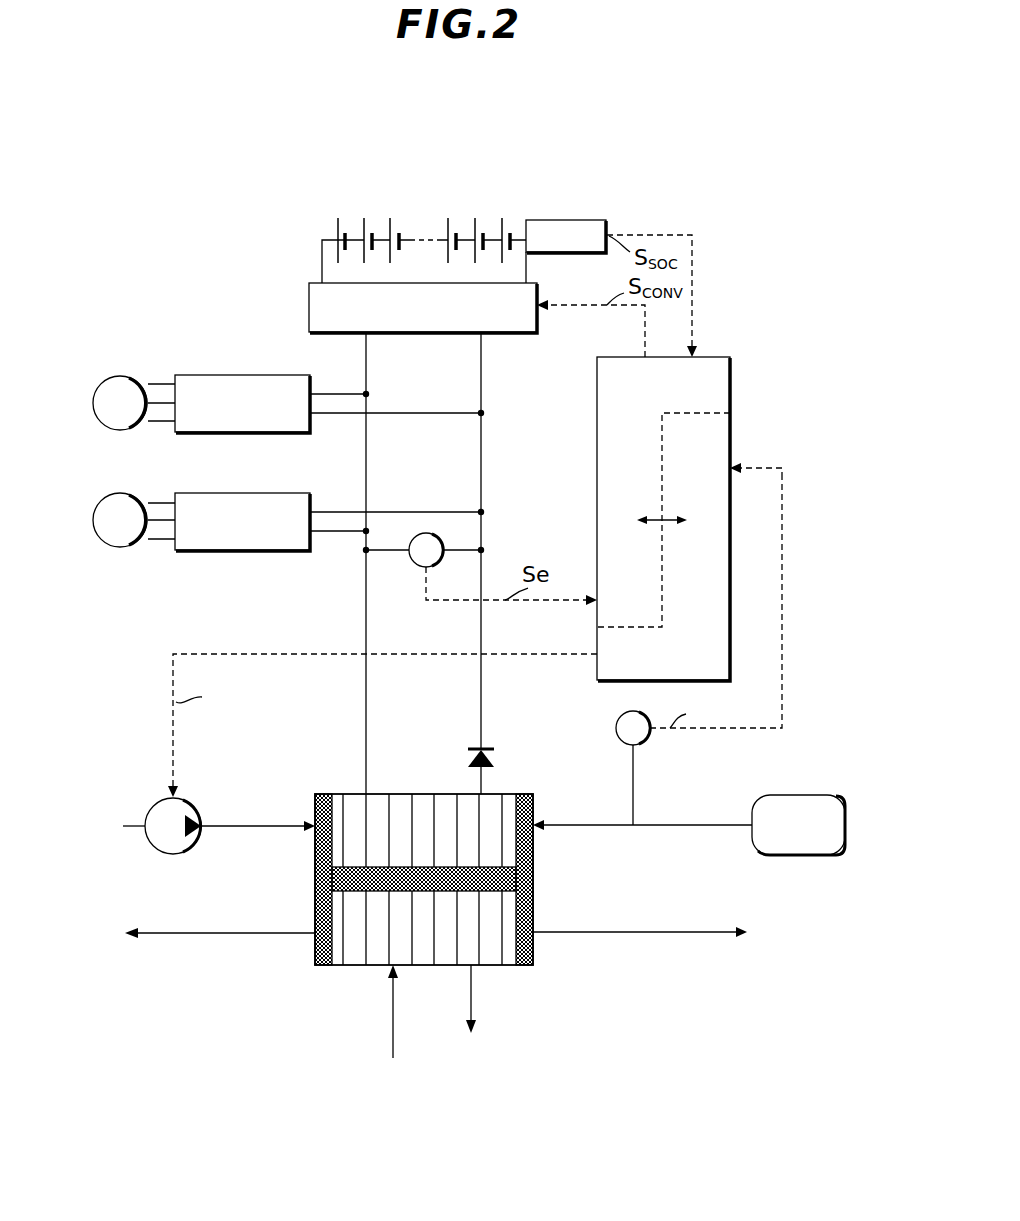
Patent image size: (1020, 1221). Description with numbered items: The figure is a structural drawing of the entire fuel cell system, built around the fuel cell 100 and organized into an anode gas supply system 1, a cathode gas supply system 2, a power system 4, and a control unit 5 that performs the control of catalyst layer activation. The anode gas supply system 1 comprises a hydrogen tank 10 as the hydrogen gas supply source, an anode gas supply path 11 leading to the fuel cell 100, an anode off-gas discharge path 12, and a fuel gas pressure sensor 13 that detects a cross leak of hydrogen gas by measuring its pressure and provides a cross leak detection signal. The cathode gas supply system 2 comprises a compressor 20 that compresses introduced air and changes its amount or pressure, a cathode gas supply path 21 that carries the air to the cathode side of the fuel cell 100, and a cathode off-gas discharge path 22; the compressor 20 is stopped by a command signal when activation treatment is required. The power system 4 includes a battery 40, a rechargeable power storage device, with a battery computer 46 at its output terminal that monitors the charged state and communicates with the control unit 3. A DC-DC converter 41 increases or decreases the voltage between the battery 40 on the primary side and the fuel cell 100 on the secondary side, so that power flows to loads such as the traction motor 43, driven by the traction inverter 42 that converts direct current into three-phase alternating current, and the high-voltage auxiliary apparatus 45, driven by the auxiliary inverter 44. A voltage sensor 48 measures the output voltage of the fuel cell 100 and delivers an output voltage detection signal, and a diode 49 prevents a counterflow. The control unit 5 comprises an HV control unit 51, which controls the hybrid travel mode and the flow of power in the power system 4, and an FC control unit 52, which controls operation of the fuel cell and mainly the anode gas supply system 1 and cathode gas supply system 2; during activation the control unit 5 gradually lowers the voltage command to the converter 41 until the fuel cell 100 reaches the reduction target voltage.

The anode gas supply system 1 is at (689, 700).
The cathode gas supply system 2 is at (356, 796).
The control unit 3 is at (443, 1016).
The power system 4 is at (436, 709).
The control unit 5 is at (697, 474).
The hydrogen tank 10 is at (790, 795).
The anode gas supply path 11 is at (678, 824).
The anode off-gas discharge path 12 is at (663, 932).
The fuel gas pressure sensor 13 is at (618, 722).
The compressor 20 is at (152, 806).
The cathode gas supply path 21 is at (238, 826).
The cathode off-gas discharge path 22 is at (207, 933).
The battery 40 is at (502, 216).
The DC-DC converter 41 is at (540, 296).
The traction inverter 42 is at (230, 376).
The traction motor 43 is at (127, 377).
The auxiliary inverter 44 is at (268, 494).
The high-voltage auxiliary apparatus 45 is at (127, 494).
The battery computer 46 is at (568, 220).
The voltage sensor 48 is at (416, 566).
The diode 49 is at (468, 760).
The HV control unit 51 is at (733, 390).
The FC control unit 52 is at (733, 448).
The fuel cell 100 is at (536, 810).